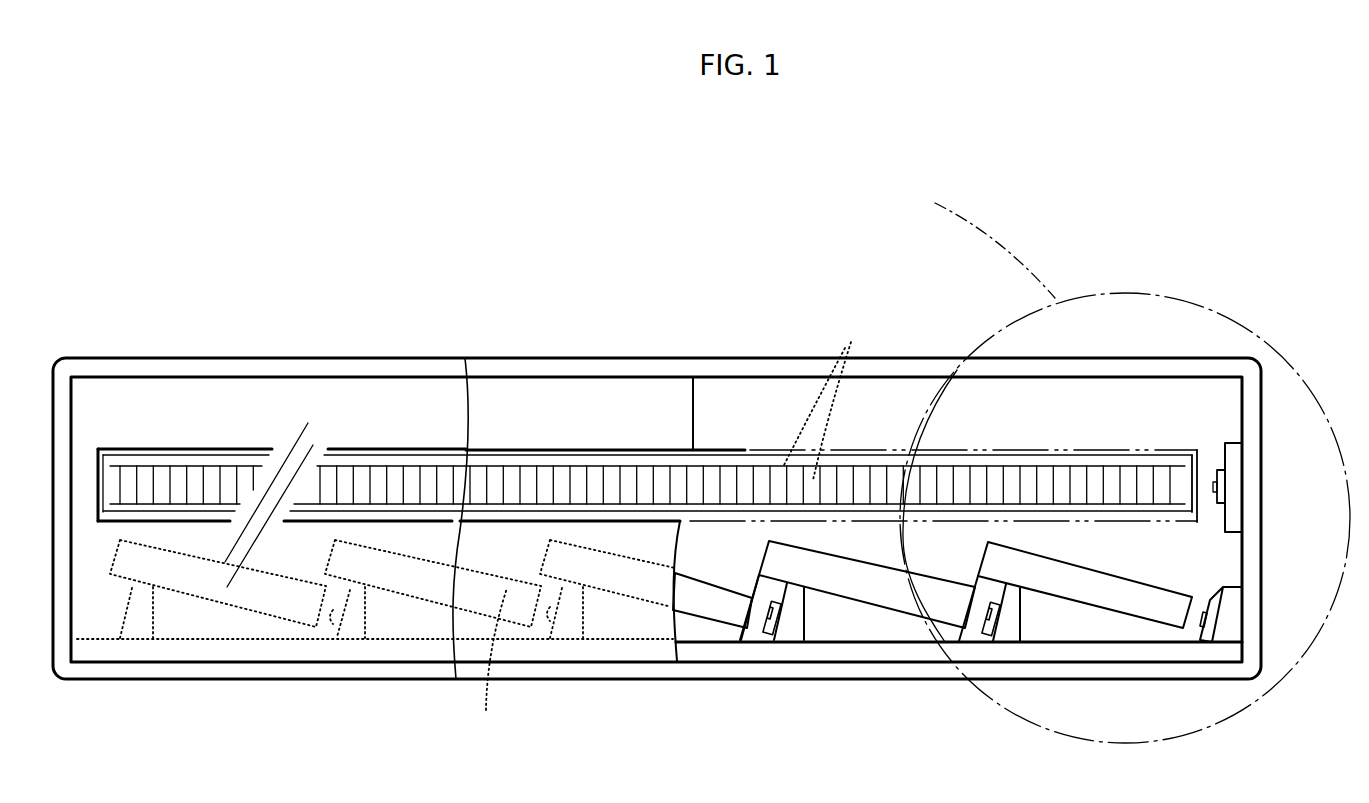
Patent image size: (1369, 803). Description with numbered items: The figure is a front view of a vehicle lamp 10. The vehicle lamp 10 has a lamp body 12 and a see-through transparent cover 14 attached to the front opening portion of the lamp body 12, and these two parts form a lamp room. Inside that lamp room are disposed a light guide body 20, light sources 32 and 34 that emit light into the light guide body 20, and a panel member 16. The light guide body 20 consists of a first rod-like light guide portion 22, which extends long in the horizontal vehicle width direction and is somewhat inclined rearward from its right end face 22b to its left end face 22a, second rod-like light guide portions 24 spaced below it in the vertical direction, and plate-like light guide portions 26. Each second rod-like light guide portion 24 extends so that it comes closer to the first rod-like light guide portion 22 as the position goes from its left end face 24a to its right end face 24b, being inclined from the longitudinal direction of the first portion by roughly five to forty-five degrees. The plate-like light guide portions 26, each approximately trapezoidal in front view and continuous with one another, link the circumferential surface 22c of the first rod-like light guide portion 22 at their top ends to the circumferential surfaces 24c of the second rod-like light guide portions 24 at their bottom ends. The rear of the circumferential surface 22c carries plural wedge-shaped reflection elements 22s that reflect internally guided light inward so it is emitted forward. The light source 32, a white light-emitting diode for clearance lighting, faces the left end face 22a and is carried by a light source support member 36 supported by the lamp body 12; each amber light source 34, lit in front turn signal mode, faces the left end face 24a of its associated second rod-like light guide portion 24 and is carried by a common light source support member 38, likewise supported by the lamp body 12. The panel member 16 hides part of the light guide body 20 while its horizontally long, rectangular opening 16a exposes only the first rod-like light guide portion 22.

The vehicle lamp 10 is at (322, 240).
The lamp body 12 is at (657, 358).
The transparent cover 14 is at (198, 354).
The panel member 16 is at (543, 403).
The opening 16a is at (613, 521).
The light guide body 20 is at (880, 430).
The first rod-like light guide portion 22 is at (708, 433).
The left end face 22a is at (1197, 492).
The right end face 22b is at (102, 483).
The circumferential surface 22c is at (733, 462).
The reflection elements 22s is at (837, 398).
The second rod-like light guide portions 24 is at (907, 573).
The left end face 24a is at (748, 617).
The right end face 24b is at (497, 661).
The circumferential surface 24c is at (707, 610).
The plate-like light guide portions 26 is at (890, 557).
The light source 32 is at (1213, 458).
The light sources 34 is at (975, 628).
The light source support member 36 is at (1235, 462).
The light source support member 38 is at (818, 650).